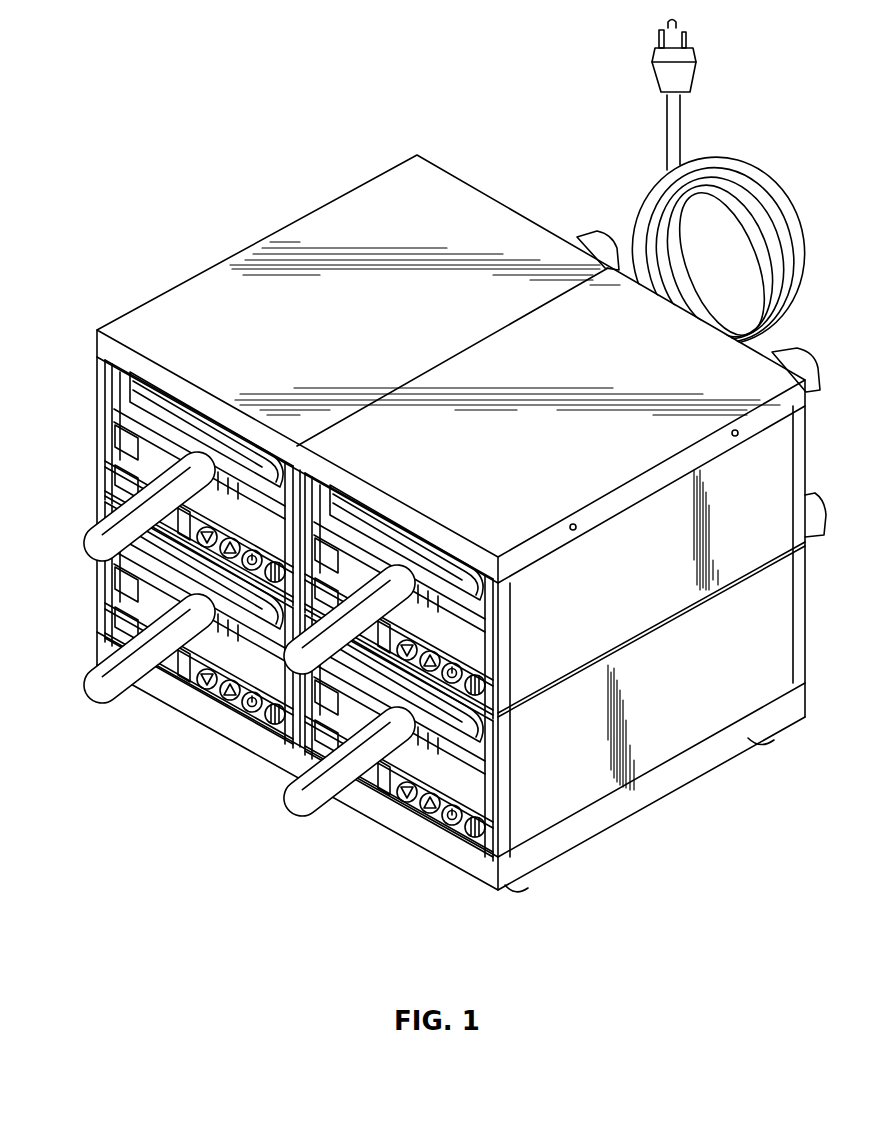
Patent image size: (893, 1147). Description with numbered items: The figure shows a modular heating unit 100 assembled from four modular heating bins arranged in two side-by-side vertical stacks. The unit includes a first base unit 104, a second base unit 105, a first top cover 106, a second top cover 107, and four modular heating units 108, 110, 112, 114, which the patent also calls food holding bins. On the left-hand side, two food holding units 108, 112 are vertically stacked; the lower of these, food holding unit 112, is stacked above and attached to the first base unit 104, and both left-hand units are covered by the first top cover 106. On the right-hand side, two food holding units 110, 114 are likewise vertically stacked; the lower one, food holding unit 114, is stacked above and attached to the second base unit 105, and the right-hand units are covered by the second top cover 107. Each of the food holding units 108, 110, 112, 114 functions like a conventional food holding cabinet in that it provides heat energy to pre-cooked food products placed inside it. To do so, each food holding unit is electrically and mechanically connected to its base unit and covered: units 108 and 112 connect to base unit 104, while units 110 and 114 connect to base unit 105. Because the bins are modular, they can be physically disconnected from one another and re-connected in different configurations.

The modular heating unit 100 is at (461, 482).
The first base unit 104 is at (185, 705).
The second base unit 105 is at (480, 880).
The first top cover 106 is at (316, 230).
The second top cover 107 is at (713, 417).
The modular heating unit (food holding bin) 108 is at (125, 460).
The modular heating unit (food holding bin) 110 is at (735, 510).
The modular heating unit (food holding bin) 112 is at (125, 600).
The modular heating unit (food holding bin) 114 is at (410, 812).